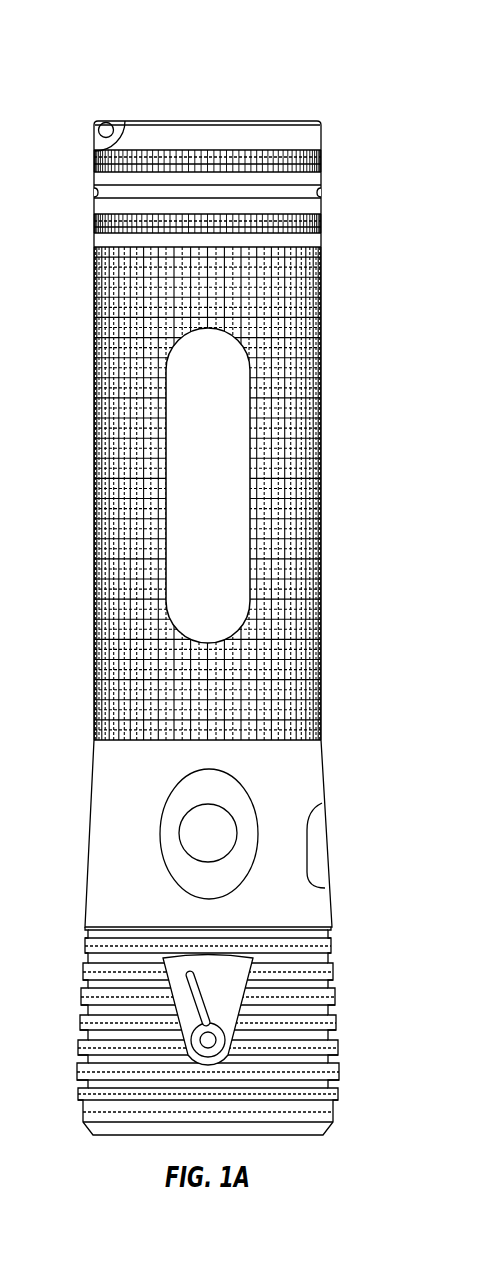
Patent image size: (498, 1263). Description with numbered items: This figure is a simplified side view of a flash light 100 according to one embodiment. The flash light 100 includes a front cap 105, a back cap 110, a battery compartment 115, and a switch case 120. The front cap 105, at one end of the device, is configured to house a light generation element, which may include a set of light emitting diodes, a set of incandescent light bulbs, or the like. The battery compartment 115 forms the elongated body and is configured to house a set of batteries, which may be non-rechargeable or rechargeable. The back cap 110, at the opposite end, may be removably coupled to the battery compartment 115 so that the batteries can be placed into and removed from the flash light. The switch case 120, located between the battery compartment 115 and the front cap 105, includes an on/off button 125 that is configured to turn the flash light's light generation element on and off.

The flash light 100 is at (151, 74).
The front cap 105 is at (335, 995).
The back cap 110 is at (322, 140).
The battery compartment 115 is at (322, 488).
The switch case 120 is at (323, 787).
The on/off button 125 is at (190, 834).